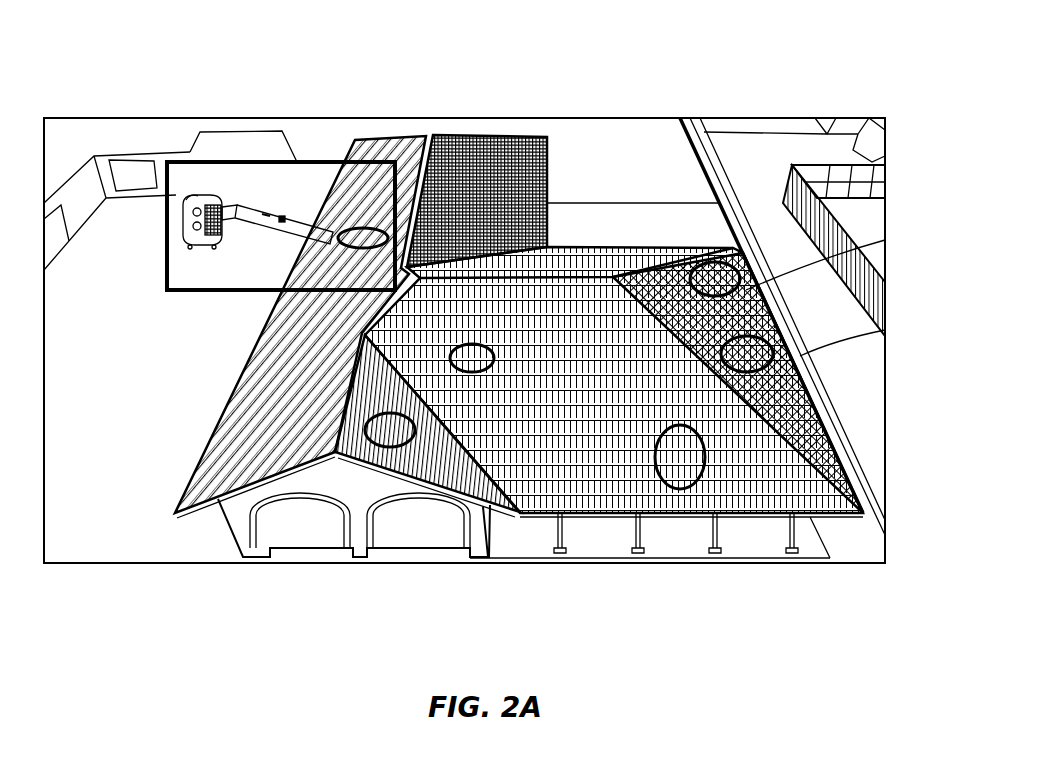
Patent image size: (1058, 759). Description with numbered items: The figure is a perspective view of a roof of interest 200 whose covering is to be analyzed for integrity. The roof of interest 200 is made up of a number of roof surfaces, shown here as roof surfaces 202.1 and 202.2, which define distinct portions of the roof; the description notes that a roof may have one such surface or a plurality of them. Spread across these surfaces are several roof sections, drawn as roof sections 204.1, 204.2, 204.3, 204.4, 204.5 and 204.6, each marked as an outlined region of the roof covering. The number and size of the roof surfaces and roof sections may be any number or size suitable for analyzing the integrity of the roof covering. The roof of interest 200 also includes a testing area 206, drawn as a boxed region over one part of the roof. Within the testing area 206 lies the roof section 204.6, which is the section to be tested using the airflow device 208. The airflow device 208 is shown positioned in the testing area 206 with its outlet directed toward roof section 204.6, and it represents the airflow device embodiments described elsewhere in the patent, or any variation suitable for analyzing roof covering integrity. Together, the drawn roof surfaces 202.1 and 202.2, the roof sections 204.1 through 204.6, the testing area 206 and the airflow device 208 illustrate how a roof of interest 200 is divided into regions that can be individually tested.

The roof of interest 200 is at (571, 41).
The roof surface 202.1 is at (333, 457).
The roof surface 202.2 is at (743, 247).
The roof section 204.1 is at (390, 447).
The roof section 204.2 is at (741, 282).
The roof section 204.3 is at (773, 352).
The roof section 204.4 is at (680, 489).
The roof section 204.5 is at (480, 372).
The roof section 204.6 is at (368, 228).
The testing area 206 is at (187, 162).
The airflow device 208 is at (240, 207).